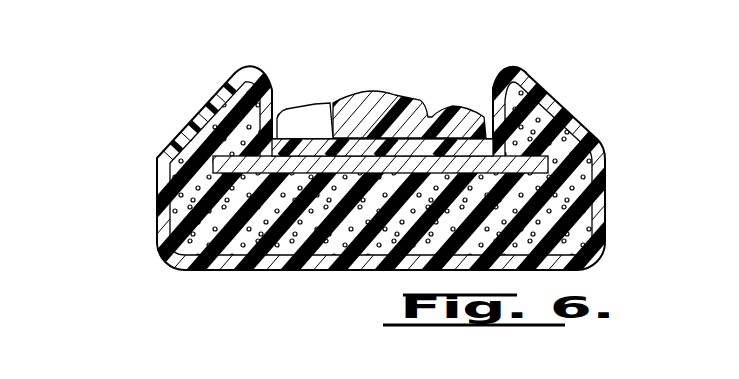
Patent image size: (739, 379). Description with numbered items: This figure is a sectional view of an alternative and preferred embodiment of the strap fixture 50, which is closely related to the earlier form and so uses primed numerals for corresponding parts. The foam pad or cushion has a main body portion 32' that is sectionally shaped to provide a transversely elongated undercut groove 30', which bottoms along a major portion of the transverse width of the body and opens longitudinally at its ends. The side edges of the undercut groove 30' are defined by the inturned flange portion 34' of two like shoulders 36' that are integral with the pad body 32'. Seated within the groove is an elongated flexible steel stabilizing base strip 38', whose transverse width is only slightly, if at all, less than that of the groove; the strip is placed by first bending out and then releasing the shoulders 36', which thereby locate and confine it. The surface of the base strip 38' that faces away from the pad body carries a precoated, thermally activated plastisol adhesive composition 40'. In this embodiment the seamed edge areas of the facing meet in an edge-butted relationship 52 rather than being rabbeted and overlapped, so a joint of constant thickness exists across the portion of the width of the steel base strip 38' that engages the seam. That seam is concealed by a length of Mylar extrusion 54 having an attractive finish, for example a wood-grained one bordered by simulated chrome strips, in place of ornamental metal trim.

The strap fixture 50 is at (110, 140).
The undercut groove 30' is at (407, 170).
The main body portion 32' is at (381, 277).
The inturned flange portion 34' is at (408, 171).
The shoulders 36' is at (420, 170).
The stabilizing base strip 38' is at (333, 165).
The plastisol adhesive composition 40' is at (379, 110).
The edge-butted relationship 52 is at (331, 117).
The Mylar extrusion 54 is at (369, 92).